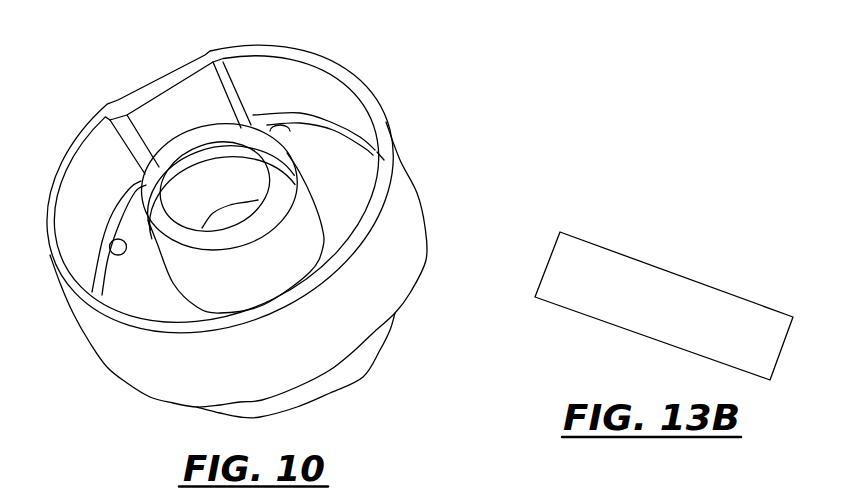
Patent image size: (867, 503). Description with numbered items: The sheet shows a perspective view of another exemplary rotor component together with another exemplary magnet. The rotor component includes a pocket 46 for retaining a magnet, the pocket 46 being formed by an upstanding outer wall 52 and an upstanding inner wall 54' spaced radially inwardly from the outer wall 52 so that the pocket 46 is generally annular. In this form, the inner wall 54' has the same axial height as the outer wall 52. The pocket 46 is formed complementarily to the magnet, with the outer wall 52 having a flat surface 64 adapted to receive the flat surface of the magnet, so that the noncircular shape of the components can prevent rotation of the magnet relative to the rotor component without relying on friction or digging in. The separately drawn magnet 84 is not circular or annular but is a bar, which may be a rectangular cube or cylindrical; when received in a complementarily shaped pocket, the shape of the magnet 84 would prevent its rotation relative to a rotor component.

In FIG. 10, the outer wall 52 is at (358, 85).
In FIG. 10, the flat surface 64 is at (175, 112).
In FIG. 10, the inner wall 54' is at (249, 168).
In FIG. 10, the pocket 46 is at (350, 167).
In FIG. 13B, the magnet 84 is at (683, 298).